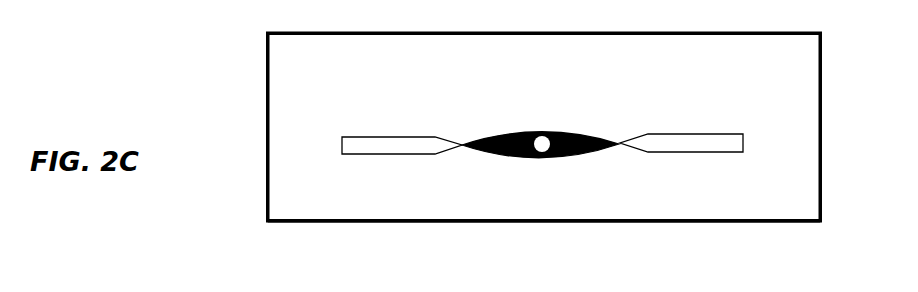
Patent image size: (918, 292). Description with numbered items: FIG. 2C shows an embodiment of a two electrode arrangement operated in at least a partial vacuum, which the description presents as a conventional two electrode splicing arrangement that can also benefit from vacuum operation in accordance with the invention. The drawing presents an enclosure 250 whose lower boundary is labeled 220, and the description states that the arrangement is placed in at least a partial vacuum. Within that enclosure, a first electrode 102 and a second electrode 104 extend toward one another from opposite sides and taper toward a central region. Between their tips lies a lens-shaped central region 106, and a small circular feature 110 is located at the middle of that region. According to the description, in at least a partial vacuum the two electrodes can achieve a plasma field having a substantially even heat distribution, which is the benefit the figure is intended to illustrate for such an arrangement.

The optical device structure 250 is at (312, 28).
The substrate layer 220 is at (340, 219).
The input waveguide 102 is at (420, 138).
The output waveguide 104 is at (697, 136).
The lens-shaped cavity 106 is at (463, 153).
The circular hole 110 is at (547, 141).